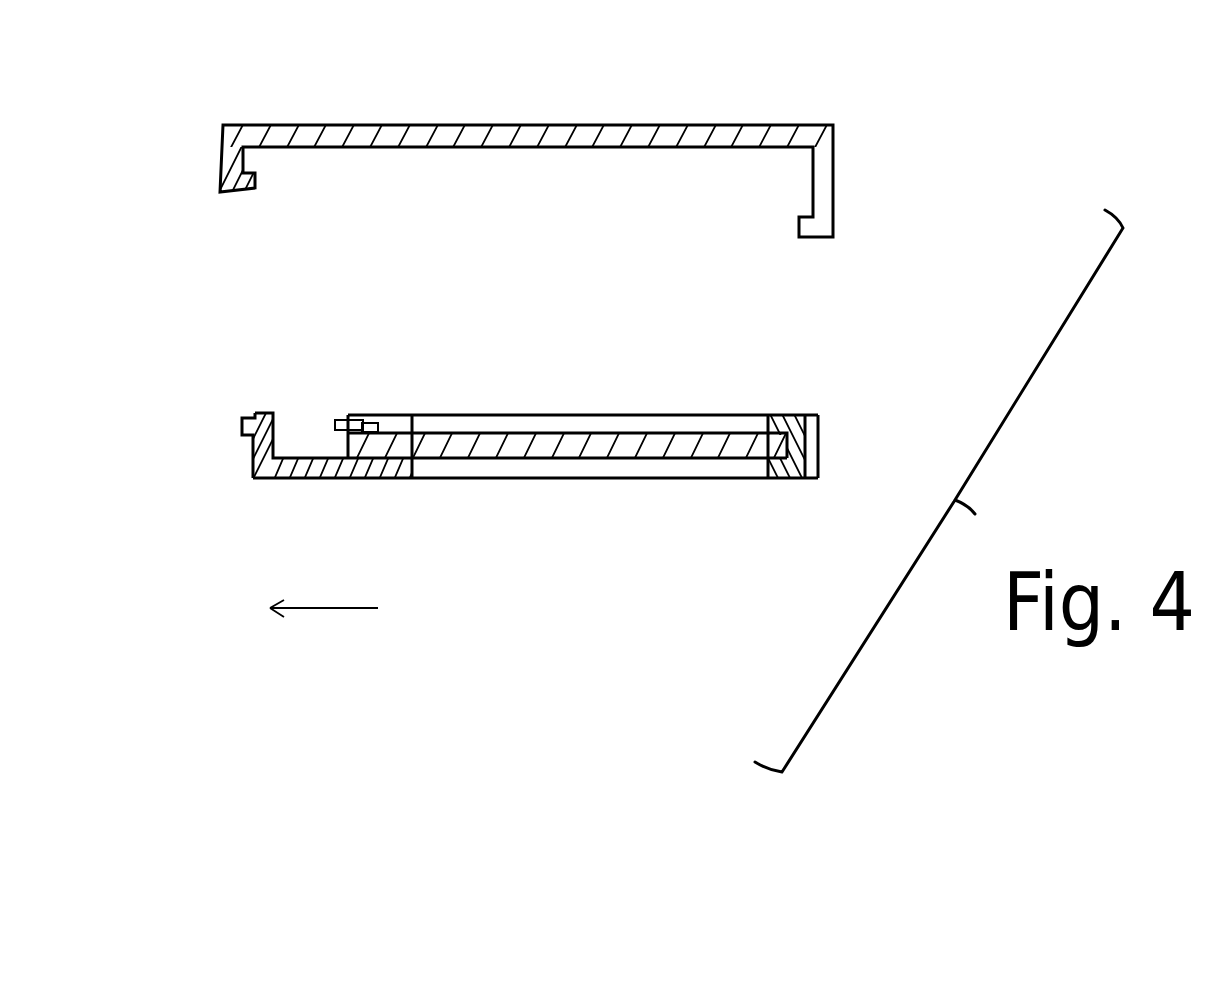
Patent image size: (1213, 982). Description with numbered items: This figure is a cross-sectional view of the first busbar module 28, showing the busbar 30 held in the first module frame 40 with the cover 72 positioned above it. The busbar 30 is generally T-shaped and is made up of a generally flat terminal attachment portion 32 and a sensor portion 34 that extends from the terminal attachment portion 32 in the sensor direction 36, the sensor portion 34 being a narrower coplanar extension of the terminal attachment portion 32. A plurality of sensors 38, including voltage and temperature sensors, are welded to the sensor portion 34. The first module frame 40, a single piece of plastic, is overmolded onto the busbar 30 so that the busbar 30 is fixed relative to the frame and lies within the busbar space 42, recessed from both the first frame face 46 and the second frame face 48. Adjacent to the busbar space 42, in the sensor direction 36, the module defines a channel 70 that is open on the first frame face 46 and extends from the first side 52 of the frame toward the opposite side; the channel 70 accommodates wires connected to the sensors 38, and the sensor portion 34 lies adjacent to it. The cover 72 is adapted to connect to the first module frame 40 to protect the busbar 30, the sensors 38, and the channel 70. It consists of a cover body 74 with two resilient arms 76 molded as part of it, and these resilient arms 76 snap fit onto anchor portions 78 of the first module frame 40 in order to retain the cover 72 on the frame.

The first busbar module 28 is at (568, 356).
The busbar 30 is at (718, 433).
The terminal attachment portion 32 is at (598, 433).
The sensor portion 34 is at (392, 435).
The sensor direction 36 is at (330, 608).
The sensors 38 is at (362, 420).
The first module frame 40 is at (805, 440).
The busbar space 42 is at (537, 424).
The first frame face 46 is at (780, 417).
The second frame face 48 is at (402, 480).
The first side 52 is at (517, 415).
The channel 70 is at (303, 457).
The cover 72 is at (549, 143).
The cover body 74 is at (450, 125).
The resilient arms 76 is at (833, 205).
The anchor portions 78 is at (790, 478).